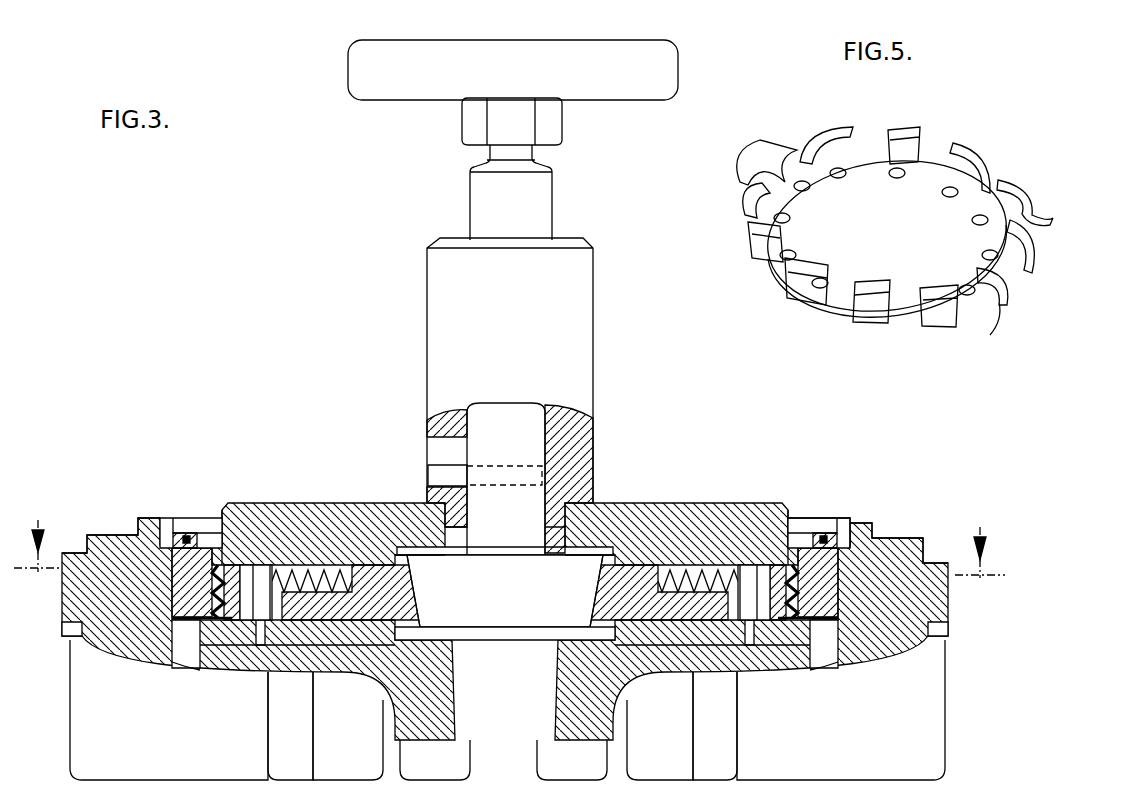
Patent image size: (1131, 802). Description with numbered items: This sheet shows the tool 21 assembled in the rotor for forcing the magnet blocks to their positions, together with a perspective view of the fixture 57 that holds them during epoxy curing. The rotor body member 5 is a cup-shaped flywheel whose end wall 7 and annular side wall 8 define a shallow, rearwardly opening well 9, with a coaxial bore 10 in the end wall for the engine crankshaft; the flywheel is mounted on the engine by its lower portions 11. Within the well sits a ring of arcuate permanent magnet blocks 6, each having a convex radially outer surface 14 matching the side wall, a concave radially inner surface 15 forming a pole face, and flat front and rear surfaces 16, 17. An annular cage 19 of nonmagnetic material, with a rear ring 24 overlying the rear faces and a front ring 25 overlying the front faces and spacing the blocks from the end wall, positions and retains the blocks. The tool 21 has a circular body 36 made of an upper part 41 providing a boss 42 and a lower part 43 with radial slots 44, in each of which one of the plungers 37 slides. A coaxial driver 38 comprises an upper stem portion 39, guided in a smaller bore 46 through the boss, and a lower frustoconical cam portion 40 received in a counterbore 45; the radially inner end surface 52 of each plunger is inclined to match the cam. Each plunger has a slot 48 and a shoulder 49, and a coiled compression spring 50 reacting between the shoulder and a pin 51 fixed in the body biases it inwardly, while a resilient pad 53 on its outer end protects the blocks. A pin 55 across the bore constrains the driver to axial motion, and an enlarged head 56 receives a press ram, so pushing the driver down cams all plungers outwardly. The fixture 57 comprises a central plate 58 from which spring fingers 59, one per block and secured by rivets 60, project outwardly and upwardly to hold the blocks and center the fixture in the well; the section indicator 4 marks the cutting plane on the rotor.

In FIG. 3, the rotor body member 5 is at (928, 526).
In FIG. 3, the end wall 7 is at (247, 672).
In FIG. 3, the well 9 is at (596, 626).
In FIG. 3, the bore 10 is at (465, 722).
In FIG. 3, the mounting foot 11 is at (88, 733).
In FIG. 3, the radially outer surface 14 is at (128, 540).
In FIG. 3, the radially inner surface 15 is at (222, 555).
In FIG. 3, the front surface 16 is at (197, 535).
In FIG. 3, the rear surface 17 is at (207, 540).
In FIG. 3, the annular cage 19 is at (178, 530).
In FIG. 3, the tool 21 is at (618, 290).
In FIG. 3, the rear ring 24 is at (830, 528).
In FIG. 3, the front ring 25 is at (810, 640).
In FIG. 3, the circular body 36 is at (633, 500).
In FIG. 3, the plungers 37 is at (378, 505).
In FIG. 3, the driver 38 is at (523, 525).
In FIG. 3, the stem portion 39 is at (494, 438).
In FIG. 3, the frustoconical cam portion 40 is at (493, 604).
In FIG. 3, the upper part 41 is at (572, 345).
In FIG. 3, the boss 42 is at (450, 337).
In FIG. 3, the lower part 43 is at (345, 505).
In FIG. 3, the radial slots 44 is at (408, 567).
In FIG. 3, the counterbore 45 is at (605, 550).
In FIG. 3, the bore 46 is at (468, 508).
In FIG. 3, the slot 48 is at (307, 610).
In FIG. 3, the shoulder 49 is at (325, 610).
In FIG. 3, the coiled compression spring 50 is at (305, 565).
In FIG. 5, the coiled compression spring 50 is at (990, 327).
In FIG. 3, the pin 51 is at (265, 606).
In FIG. 3, the radially inner end surface 52 is at (422, 600).
In FIG. 3, the pad 53 is at (197, 622).
In FIG. 3, the pin 55 is at (447, 468).
In FIG. 3, the enlarged head 56 is at (486, 50).
In FIG. 5, the fixture 57 is at (1010, 157).
In FIG. 5, the plate 58 is at (872, 240).
In FIG. 5, the spring fingers 59 is at (757, 157).
In FIG. 5, the rivets 60 is at (897, 176).
In FIG. 3, the section line 4 is at (509, 562).
In FIG. 3, the permanent magnet blocks 6 is at (818, 540).
In FIG. 3, the side wall 8 is at (835, 548).